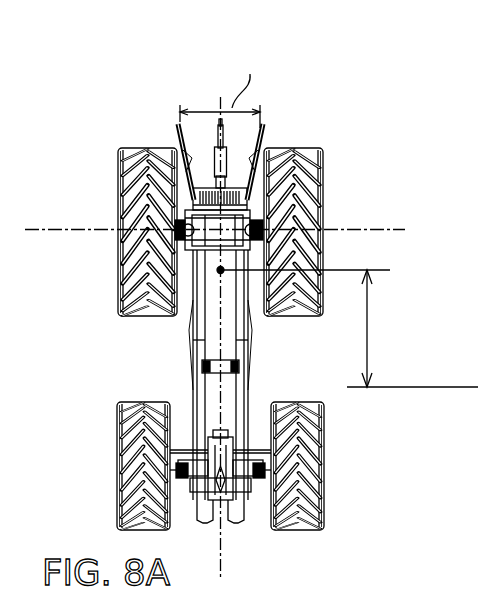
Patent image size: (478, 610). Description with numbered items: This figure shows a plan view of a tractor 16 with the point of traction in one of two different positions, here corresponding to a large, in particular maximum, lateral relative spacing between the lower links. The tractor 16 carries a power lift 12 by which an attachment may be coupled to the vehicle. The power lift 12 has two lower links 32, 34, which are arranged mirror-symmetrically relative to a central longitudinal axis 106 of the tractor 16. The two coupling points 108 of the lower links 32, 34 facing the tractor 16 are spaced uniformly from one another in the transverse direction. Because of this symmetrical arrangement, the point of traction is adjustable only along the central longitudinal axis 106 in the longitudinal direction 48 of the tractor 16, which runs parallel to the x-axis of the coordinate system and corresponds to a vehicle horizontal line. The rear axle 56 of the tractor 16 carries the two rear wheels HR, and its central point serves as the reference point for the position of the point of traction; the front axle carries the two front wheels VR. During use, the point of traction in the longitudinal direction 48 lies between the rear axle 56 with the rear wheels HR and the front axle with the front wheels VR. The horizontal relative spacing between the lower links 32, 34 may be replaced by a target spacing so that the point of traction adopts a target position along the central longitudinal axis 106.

The power lift 12 is at (171, 264).
The tractor 16 is at (125, 348).
The lower link 32 is at (178, 124).
The lower link 34 is at (263, 126).
The longitudinal direction 48 is at (372, 335).
The rear axle 56 is at (75, 232).
The central longitudinal axis 106 is at (224, 561).
The coupling points 108 is at (220, 214).
The rear wheels HR is at (118, 209).
The front wheels VR is at (118, 459).